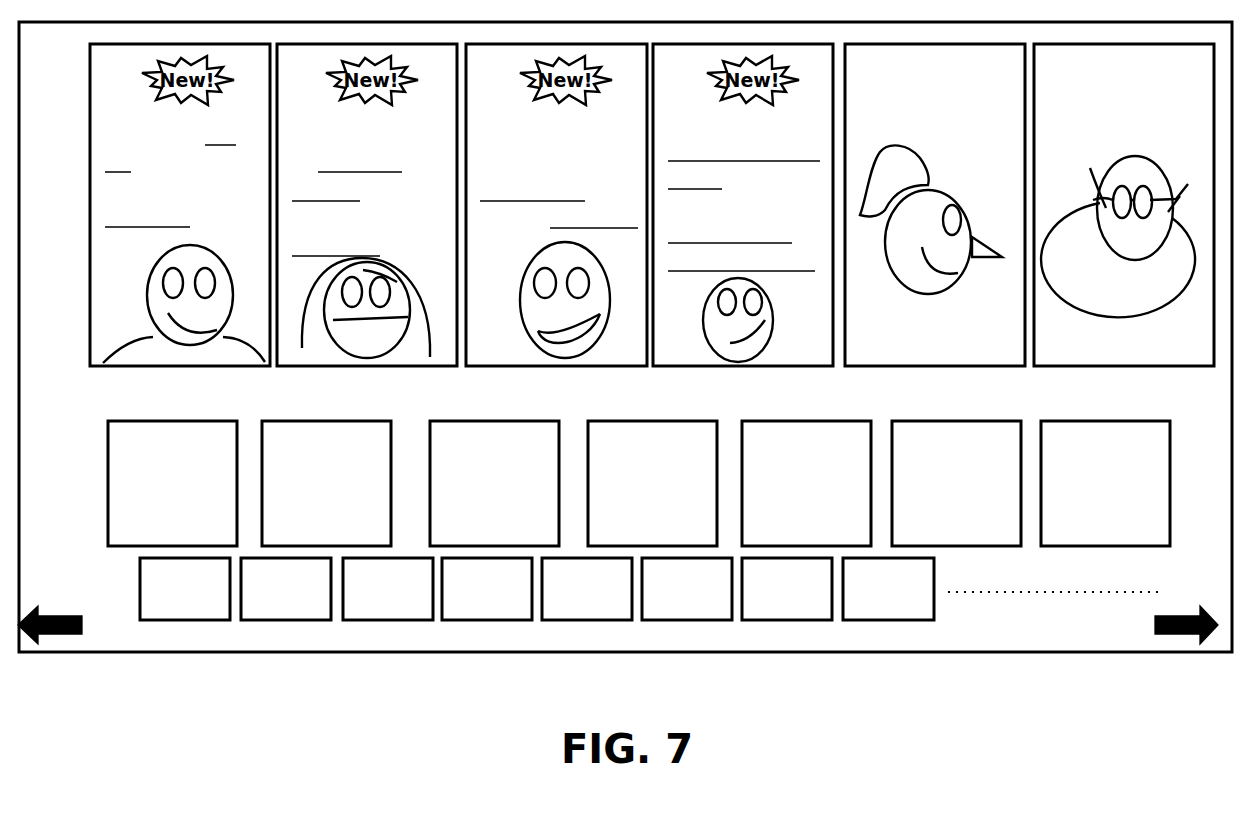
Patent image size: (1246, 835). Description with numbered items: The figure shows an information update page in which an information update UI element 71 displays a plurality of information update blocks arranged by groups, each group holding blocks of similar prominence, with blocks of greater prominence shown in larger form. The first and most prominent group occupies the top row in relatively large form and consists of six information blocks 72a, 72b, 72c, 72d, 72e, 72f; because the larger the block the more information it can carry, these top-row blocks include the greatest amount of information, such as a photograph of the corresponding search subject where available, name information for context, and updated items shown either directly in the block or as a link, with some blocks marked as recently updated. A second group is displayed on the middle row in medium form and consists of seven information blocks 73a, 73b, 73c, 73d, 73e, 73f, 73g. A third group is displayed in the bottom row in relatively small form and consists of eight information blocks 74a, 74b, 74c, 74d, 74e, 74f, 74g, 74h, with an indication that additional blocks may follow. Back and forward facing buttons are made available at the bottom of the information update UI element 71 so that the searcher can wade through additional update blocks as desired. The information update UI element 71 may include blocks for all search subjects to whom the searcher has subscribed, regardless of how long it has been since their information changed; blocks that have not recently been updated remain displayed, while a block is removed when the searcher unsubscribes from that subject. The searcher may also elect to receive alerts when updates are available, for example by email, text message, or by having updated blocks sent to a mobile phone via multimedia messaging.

The information update UI element 71 is at (1184, 691).
The information block 72a is at (180, 222).
The information block 72b is at (367, 222).
The information block 72c is at (556, 222).
The information block 72d is at (743, 222).
The information block 72e is at (935, 222).
The information block 72f is at (1124, 222).
The information block 73a is at (172, 483).
The information block 73b is at (326, 483).
The information block 73c is at (494, 483).
The information block 73d is at (652, 483).
The information block 73e is at (806, 483).
The information block 73f is at (956, 483).
The information block 73g is at (1105, 483).
The information block 74a is at (185, 589).
The information block 74b is at (286, 589).
The information block 74c is at (388, 589).
The information block 74d is at (487, 589).
The information block 74e is at (587, 589).
The information block 74f is at (687, 589).
The information block 74g is at (787, 589).
The information block 74h is at (888, 589).